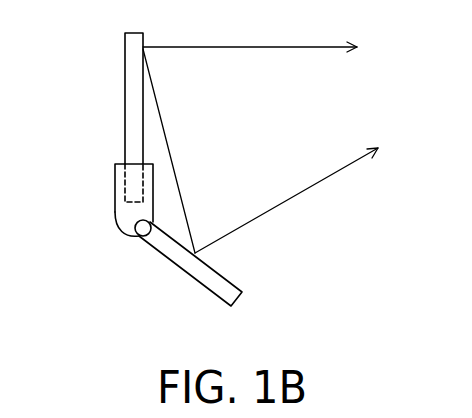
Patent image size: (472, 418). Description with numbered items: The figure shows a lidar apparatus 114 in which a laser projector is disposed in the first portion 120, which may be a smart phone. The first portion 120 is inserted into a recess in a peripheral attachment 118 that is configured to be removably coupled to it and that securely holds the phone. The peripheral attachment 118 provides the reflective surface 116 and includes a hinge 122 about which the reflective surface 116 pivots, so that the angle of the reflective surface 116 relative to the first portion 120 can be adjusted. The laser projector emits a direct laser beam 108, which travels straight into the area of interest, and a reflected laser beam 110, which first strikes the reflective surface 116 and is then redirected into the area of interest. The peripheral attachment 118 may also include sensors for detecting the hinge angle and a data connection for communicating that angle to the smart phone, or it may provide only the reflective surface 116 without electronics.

The direct laser beam 108 is at (250, 47).
The reflected laser beam 110 is at (287, 205).
The lidar apparatus 114 is at (255, 355).
The reflective surface 116 is at (230, 278).
The peripheral attachment 118 is at (115, 216).
The first portion 120 is at (125, 90).
The hinge 122 is at (141, 237).